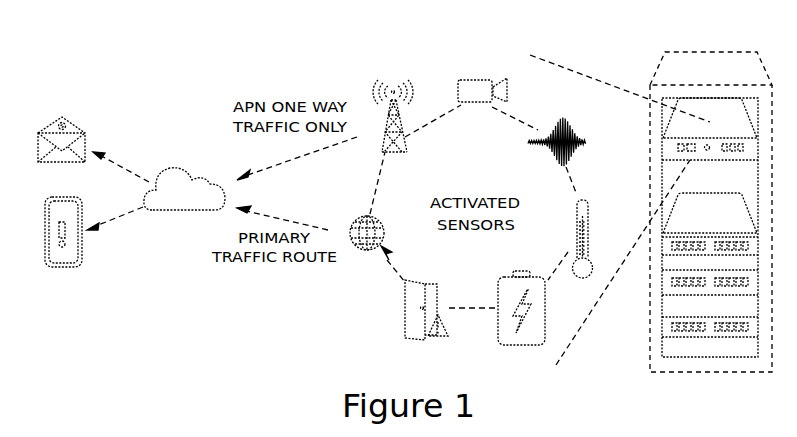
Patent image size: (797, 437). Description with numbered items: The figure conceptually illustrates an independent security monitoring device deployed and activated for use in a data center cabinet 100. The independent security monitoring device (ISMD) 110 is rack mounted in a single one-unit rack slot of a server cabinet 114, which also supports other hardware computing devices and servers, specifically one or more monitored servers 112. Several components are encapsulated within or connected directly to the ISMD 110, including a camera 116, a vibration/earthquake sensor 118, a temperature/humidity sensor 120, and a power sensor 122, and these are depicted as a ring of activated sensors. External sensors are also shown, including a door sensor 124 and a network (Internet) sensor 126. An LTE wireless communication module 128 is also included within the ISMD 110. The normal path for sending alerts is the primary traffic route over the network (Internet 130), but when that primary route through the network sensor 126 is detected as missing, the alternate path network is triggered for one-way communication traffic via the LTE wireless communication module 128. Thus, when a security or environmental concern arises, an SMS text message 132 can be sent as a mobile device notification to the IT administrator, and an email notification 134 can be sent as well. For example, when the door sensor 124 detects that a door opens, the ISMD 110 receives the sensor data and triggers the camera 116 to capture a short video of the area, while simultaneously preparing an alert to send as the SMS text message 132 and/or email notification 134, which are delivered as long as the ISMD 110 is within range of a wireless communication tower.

The data center cabinet 100 is at (112, 50).
The independent security monitoring device (ISMD) 110 is at (735, 118).
The monitored servers 112 is at (745, 202).
The server cabinet 114 is at (668, 62).
The camera 116 is at (473, 80).
The vibration/earthquake sensor 118 is at (563, 118).
The temperature/humidity sensor 120 is at (588, 225).
The power sensor 122 is at (513, 347).
The door sensor 124 is at (412, 328).
The network (Internet) sensor 126 is at (366, 217).
The LTE wireless communication module 128 is at (392, 84).
The network (Internet) 130 is at (173, 186).
The SMS text message 132 is at (68, 229).
The email notification 134 is at (72, 122).